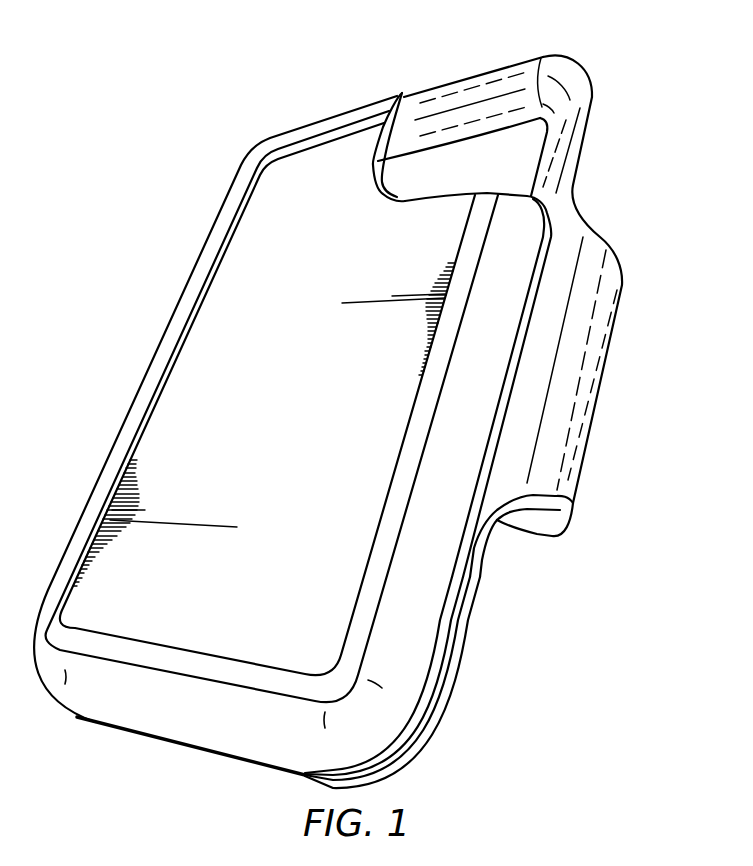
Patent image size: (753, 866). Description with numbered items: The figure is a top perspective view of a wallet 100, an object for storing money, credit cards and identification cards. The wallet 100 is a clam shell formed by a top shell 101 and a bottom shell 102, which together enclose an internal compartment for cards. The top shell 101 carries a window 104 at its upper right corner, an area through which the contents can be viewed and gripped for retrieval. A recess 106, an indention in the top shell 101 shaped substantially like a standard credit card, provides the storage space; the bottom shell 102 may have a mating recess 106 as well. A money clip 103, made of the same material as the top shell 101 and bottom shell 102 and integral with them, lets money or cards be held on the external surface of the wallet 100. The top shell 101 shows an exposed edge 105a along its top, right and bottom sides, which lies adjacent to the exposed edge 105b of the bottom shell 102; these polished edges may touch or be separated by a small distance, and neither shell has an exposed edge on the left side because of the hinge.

The wallet 100 is at (233, 46).
The top shell 101 is at (232, 318).
The bottom shell 102 is at (570, 66).
The money clip 103 is at (580, 419).
The window 104 is at (372, 166).
The exposed edge of top shell 105a is at (436, 670).
The exposed edge of bottom shell 105b is at (462, 622).
The recess 106 is at (468, 140).